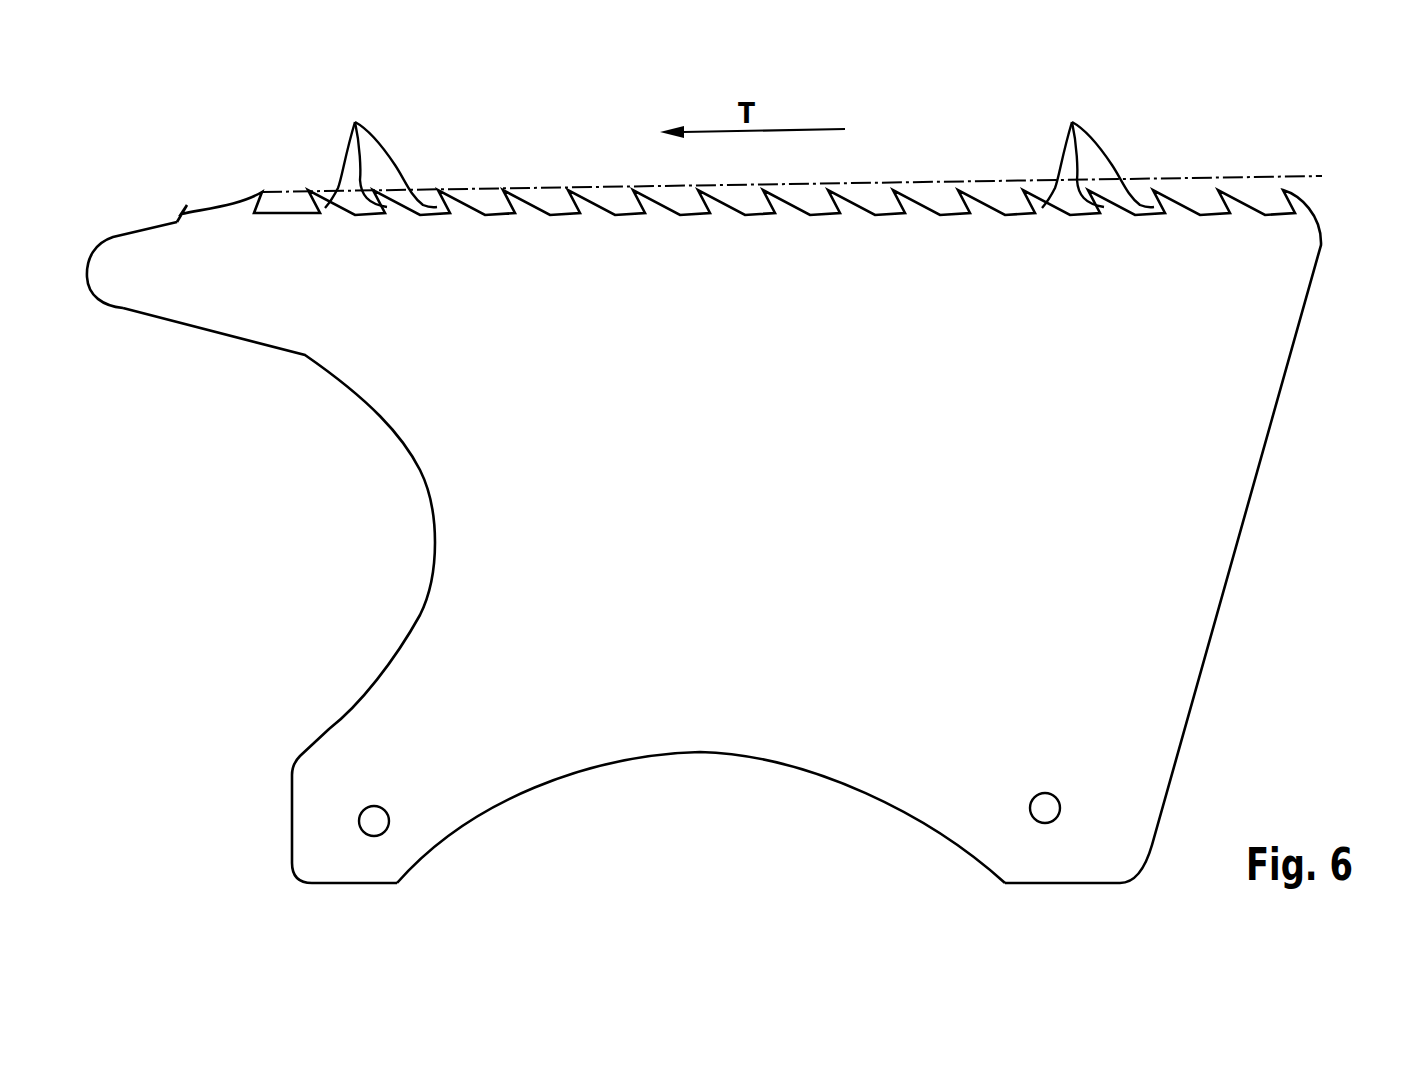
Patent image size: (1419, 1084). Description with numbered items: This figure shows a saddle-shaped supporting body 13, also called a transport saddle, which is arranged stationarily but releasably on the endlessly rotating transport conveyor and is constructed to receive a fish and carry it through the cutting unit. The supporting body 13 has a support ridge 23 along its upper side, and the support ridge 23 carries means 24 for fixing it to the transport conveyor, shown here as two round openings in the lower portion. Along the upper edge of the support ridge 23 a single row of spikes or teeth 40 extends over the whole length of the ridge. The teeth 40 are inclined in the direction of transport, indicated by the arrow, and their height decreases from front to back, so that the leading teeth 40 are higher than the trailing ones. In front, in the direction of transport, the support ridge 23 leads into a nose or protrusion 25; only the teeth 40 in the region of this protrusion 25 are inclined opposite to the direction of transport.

The supporting body 13 is at (1324, 458).
The support ridge 23 is at (702, 720).
The means for fixing 24 is at (374, 821).
The nose or protrusion 25 is at (125, 293).
The teeth 40 is at (355, 123).